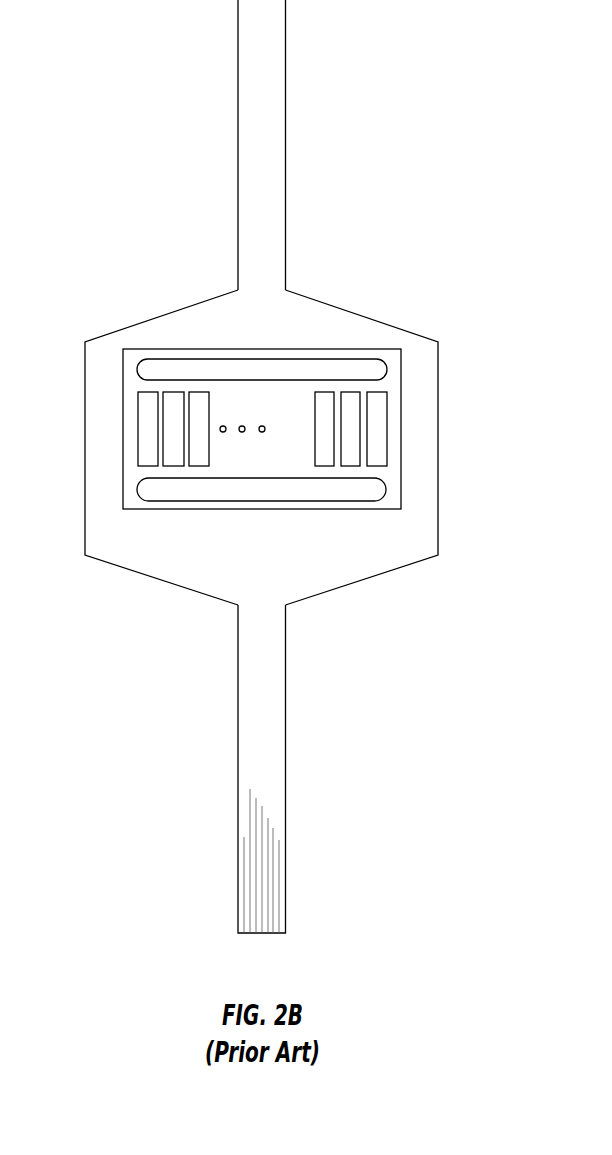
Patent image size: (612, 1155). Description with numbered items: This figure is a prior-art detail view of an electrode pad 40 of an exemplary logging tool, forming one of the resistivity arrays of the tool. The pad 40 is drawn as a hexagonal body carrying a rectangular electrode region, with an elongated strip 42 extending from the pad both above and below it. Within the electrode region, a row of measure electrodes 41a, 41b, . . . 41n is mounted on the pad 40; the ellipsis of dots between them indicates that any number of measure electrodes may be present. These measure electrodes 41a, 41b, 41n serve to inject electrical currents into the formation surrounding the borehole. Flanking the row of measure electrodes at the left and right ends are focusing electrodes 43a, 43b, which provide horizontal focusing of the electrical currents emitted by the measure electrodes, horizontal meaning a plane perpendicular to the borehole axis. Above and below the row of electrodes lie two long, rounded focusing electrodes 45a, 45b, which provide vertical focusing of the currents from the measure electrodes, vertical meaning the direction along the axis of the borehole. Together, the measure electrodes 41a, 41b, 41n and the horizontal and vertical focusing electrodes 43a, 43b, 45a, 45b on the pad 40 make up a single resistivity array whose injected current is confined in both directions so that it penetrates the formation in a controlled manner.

The pad 40 is at (318, 297).
The elongated strip / tail 42 is at (286, 173).
The measure electrode 41a is at (177, 410).
The measure electrode 41b is at (198, 450).
The measure electrode 41n is at (348, 410).
The focusing electrode 43a is at (148, 421).
The focusing electrode 43b is at (380, 421).
The focusing electrode 45a is at (213, 368).
The focusing electrode 45b is at (375, 489).